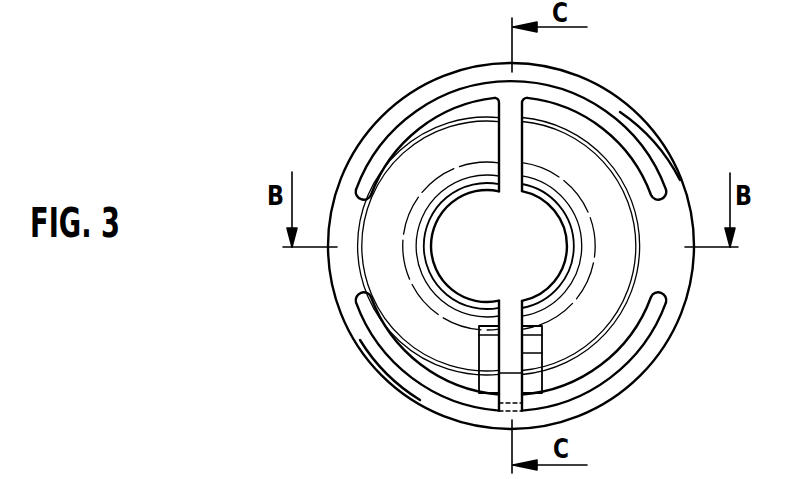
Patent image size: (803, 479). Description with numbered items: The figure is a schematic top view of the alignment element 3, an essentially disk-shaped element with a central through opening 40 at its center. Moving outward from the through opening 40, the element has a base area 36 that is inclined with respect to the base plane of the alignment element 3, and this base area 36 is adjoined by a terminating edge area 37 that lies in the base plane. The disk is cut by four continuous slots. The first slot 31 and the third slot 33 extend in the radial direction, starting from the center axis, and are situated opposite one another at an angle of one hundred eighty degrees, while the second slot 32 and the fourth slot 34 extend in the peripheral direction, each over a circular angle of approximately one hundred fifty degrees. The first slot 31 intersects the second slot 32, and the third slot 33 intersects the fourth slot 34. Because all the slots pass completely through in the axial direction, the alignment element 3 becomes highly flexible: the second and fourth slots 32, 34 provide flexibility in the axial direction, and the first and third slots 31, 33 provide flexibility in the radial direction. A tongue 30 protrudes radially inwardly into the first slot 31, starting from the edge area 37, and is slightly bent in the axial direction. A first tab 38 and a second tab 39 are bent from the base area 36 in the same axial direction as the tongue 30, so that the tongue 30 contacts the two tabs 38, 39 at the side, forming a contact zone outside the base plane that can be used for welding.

The alignment element 3 is at (383, 72).
The tongue 30 is at (513, 388).
The first slot 31 is at (492, 348).
The second slot 32 is at (383, 340).
The third slot 33 is at (513, 138).
The fourth slot 34 is at (607, 120).
The base area 36 is at (607, 195).
The terminating edge area 37 is at (648, 138).
The first tab 38 is at (480, 400).
The second tab 39 is at (532, 355).
The central through opening 40 is at (472, 212).